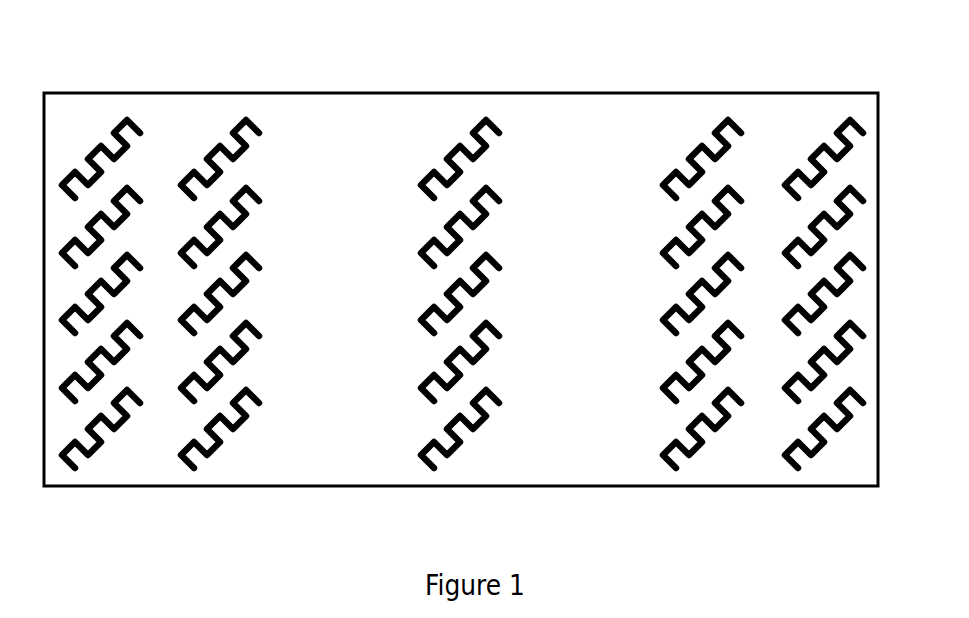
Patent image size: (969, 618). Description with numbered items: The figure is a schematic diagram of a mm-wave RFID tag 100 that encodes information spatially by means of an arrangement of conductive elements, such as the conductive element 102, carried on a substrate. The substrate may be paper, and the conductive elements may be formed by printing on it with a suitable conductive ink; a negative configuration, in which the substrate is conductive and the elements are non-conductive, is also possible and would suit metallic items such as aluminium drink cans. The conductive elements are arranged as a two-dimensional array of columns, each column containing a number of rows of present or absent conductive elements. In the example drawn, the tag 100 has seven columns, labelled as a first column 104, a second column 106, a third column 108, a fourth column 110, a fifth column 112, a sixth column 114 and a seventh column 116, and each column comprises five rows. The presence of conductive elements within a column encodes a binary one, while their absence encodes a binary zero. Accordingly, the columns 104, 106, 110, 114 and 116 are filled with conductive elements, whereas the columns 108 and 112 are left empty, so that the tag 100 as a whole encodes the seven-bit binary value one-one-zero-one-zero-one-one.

The mm-wave RFID tag 100 is at (745, 71).
The conductive element 102 is at (258, 122).
The first column 104 is at (94, 501).
The second column 106 is at (222, 501).
The third column 108 is at (349, 503).
The fourth column 110 is at (457, 503).
The fifth column 112 is at (583, 503).
The sixth column 114 is at (708, 501).
The seventh column 116 is at (829, 503).